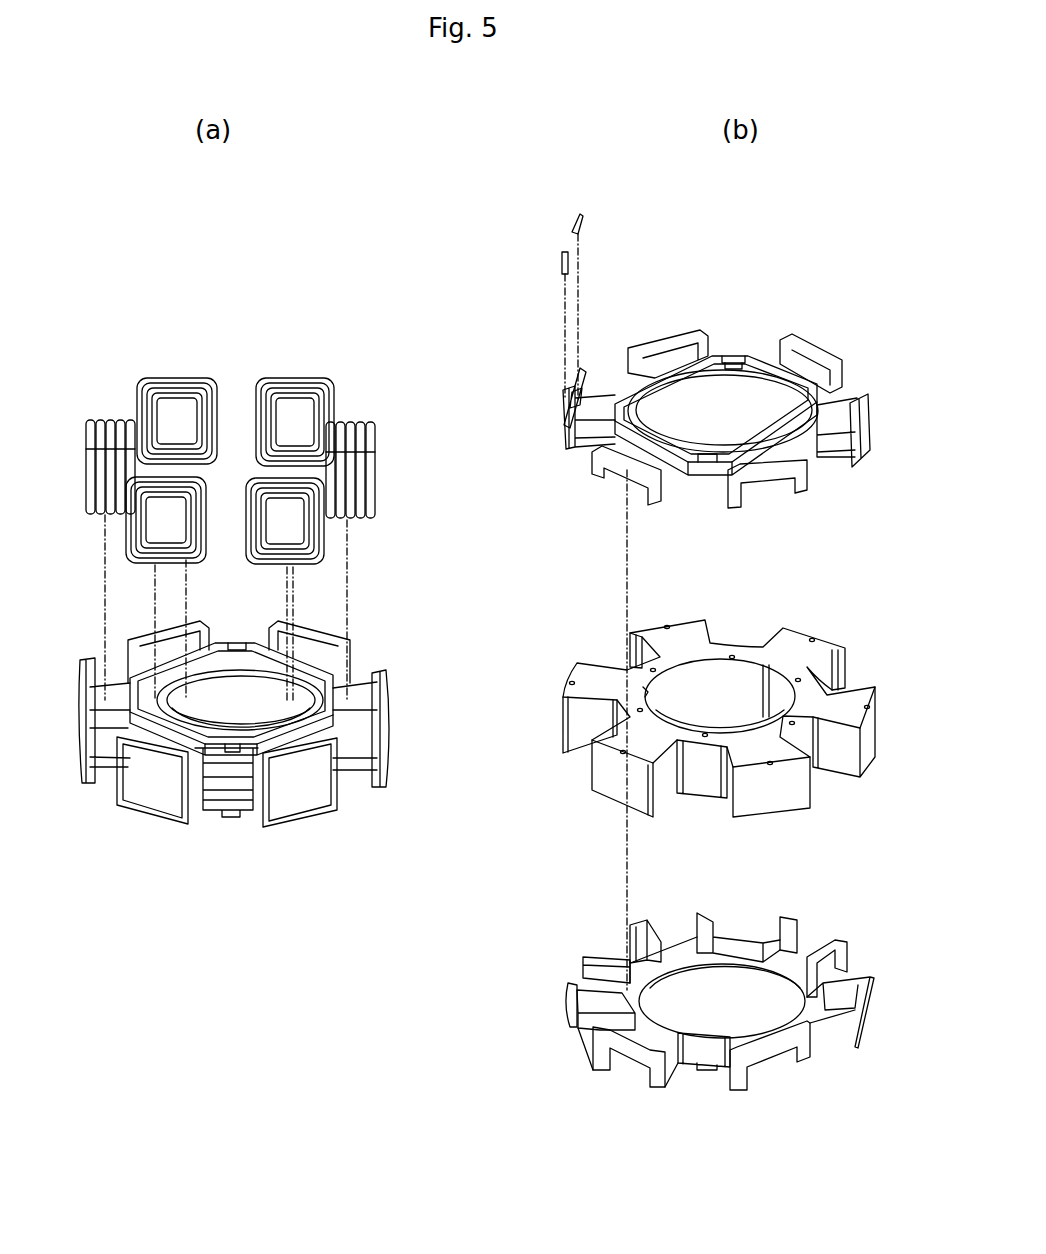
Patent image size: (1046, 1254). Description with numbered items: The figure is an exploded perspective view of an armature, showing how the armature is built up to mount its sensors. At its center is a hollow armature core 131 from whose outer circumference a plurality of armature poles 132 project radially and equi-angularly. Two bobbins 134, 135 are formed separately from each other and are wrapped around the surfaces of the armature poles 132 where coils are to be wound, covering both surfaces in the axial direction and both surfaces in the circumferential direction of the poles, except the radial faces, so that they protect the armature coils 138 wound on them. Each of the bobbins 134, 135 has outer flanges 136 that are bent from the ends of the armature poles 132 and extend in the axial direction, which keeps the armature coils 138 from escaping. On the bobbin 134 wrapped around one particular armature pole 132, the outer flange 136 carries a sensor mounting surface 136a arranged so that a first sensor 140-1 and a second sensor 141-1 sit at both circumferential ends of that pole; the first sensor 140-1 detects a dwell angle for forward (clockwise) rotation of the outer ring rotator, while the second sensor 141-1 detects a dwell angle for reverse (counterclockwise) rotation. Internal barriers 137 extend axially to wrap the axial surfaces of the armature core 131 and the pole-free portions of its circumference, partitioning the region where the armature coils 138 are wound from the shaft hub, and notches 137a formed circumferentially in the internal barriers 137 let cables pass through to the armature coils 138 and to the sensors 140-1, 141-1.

The armature core 131 is at (633, 707).
The armature pole 132 is at (147, 790).
The bobbin 134 is at (203, 765).
The bobbin 135 is at (205, 790).
The outer flange 136 is at (181, 760).
The sensor mounting surface 136a is at (565, 416).
The internal barrier 137 is at (760, 357).
The notch 137a is at (732, 353).
The armature coil 138 is at (163, 377).
The first sensor 140-1 is at (565, 262).
The second sensor 141-1 is at (575, 228).